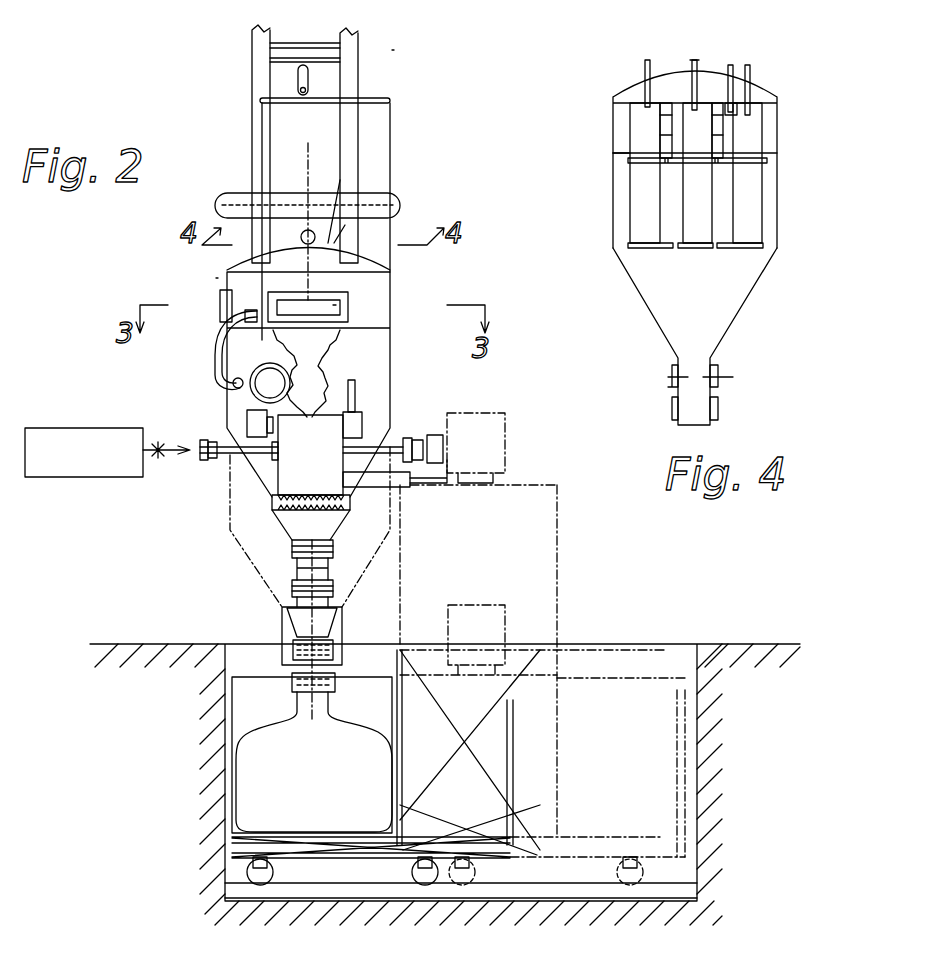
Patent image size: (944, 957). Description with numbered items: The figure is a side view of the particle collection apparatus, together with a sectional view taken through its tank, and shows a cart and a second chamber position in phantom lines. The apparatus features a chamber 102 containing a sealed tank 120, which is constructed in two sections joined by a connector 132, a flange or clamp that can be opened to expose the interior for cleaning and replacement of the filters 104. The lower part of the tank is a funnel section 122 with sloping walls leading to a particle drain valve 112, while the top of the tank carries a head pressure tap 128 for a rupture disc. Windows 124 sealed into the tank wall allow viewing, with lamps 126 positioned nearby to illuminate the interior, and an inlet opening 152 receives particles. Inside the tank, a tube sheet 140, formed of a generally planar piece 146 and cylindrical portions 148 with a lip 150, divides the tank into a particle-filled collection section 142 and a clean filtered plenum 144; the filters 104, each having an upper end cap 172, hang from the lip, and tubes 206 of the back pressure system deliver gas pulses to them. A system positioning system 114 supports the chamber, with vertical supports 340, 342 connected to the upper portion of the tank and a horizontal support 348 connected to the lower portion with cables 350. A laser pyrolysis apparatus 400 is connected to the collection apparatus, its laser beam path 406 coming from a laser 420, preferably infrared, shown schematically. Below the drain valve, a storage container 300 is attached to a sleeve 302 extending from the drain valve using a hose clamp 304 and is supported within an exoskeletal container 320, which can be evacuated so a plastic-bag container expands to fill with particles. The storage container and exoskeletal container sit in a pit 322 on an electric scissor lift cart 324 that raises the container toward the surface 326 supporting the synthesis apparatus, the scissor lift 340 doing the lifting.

In FIG. 2, the chamber 102 is at (205, 282).
In FIG. 4, the filters 104 is at (693, 228).
In FIG. 2, the particle drain valve 112 is at (290, 553).
In FIG. 2, the system positioning system 114 is at (402, 54).
In FIG. 2, the tank 120 is at (367, 285).
In FIG. 2, the funnel section 122 is at (257, 485).
In FIG. 2, the windows 124 is at (250, 393).
In FIG. 2, the lamps 126 is at (243, 377).
In FIG. 2, the head pressure tap 128 is at (345, 218).
In FIG. 2, the connector 132 is at (380, 333).
In FIG. 4, the connector 132 is at (613, 153).
In FIG. 4, the tube sheet 140 is at (620, 100).
In FIG. 4, the collection section 142 is at (767, 172).
In FIG. 4, the filtered plenum 144 is at (733, 107).
In FIG. 4, the generally planar piece 146 is at (700, 83).
In FIG. 4, the cylindrical portions 148 is at (663, 127).
In FIG. 4, the lip 150 is at (630, 163).
In FIG. 2, the inlet opening 152 is at (335, 305).
In FIG. 4, the inlet opening 152 is at (737, 110).
In FIG. 4, the upper end cap 172 is at (628, 165).
In FIG. 4, the tubes 206 is at (687, 68).
In FIG. 2, the storage container 300 is at (250, 750).
In FIG. 2, the sleeve 302 is at (278, 608).
In FIG. 2, the hose clamp 304 is at (290, 587).
In FIG. 2, the exoskeletal container 320 is at (243, 705).
In FIG. 2, the pit 322 is at (667, 650).
In FIG. 2, the electric scissor lift cart 324 is at (223, 852).
In FIG. 2, the surface 326 is at (200, 643).
In FIG. 2, the vertical support 340 is at (252, 75).
In FIG. 2, the vertical support 342 is at (358, 70).
In FIG. 2, the horizontal support 348 is at (385, 99).
In FIG. 2, the cables 350 is at (262, 142).
In FIG. 2, the laser pyrolysis apparatus 400 is at (259, 472).
In FIG. 2, the laser beam path 406 is at (191, 436).
In FIG. 2, the laser 420 is at (60, 478).